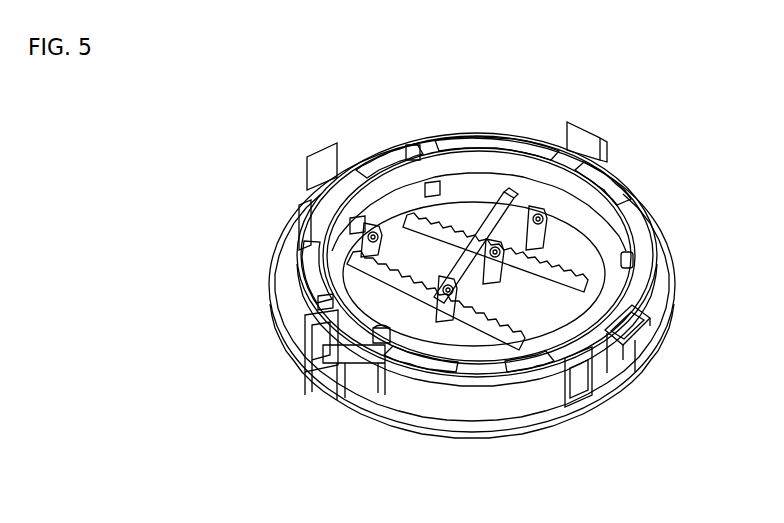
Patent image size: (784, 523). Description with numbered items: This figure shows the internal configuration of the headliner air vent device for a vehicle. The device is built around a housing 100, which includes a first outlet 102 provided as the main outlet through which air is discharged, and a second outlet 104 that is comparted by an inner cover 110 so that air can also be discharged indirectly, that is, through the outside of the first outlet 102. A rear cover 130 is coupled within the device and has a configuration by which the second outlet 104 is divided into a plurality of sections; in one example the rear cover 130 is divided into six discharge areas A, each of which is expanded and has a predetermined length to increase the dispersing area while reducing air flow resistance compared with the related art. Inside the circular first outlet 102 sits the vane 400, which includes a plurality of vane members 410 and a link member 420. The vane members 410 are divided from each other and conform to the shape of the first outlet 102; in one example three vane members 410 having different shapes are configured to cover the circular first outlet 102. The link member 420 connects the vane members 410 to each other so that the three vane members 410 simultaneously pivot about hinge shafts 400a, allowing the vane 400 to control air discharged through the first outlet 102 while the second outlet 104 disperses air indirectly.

The housing 100 is at (650, 347).
The first outlet 102 is at (418, 323).
The second outlet 104 is at (282, 330).
The inner cover 110 is at (392, 208).
The rear cover 130 is at (297, 217).
The vane 400 is at (467, 287).
The hinge shaft 400a is at (432, 190).
The vane member 410 is at (552, 267).
The link member 420 is at (492, 192).
The discharge area A is at (600, 383).